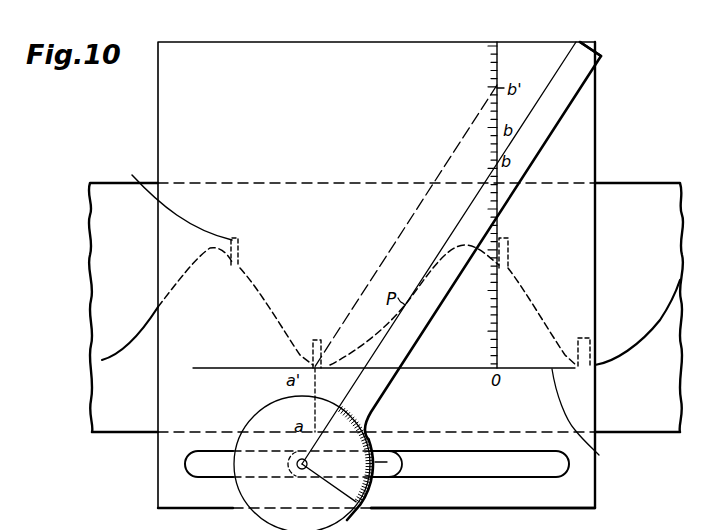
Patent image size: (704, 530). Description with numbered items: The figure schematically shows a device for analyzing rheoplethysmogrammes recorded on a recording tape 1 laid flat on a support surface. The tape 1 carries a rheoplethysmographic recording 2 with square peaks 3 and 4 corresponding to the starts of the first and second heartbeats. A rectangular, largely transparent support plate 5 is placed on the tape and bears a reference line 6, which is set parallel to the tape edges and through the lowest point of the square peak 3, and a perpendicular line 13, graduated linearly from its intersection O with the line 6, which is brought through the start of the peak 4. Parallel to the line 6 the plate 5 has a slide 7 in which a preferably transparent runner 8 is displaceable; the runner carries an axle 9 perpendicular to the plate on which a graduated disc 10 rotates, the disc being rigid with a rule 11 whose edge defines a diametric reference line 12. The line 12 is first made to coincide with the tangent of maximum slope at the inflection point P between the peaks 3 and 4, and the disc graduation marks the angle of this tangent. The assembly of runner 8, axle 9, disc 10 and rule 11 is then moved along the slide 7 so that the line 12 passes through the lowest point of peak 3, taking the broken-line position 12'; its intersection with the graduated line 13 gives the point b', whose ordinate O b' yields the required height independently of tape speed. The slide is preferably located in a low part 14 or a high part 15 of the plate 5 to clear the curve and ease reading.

The recording tape 1 is at (636, 193).
The rheoplethysmographic recording 2 is at (627, 352).
The square peak 3 is at (316, 338).
The square peak 4 is at (524, 240).
The support plate 5 is at (543, 55).
The reference line 6 is at (583, 420).
The slide 7 is at (450, 476).
The runner 8 is at (396, 474).
The axle 9 is at (300, 466).
The disc 10 is at (347, 520).
The rule 11 is at (567, 107).
The reference line 12 is at (592, 36).
The displaced position of reference line 12' is at (405, 192).
The graduated line 13 is at (498, 56).
The low part of support plate 14 is at (590, 498).
The high part of support plate 15 is at (250, 53).